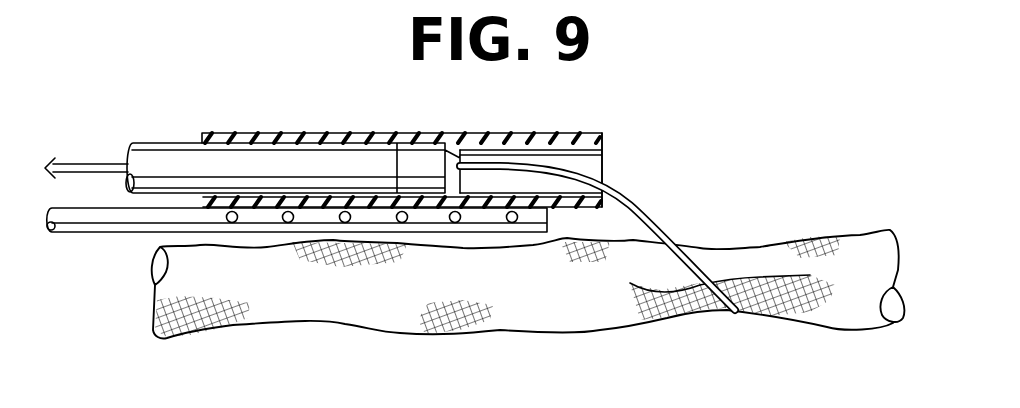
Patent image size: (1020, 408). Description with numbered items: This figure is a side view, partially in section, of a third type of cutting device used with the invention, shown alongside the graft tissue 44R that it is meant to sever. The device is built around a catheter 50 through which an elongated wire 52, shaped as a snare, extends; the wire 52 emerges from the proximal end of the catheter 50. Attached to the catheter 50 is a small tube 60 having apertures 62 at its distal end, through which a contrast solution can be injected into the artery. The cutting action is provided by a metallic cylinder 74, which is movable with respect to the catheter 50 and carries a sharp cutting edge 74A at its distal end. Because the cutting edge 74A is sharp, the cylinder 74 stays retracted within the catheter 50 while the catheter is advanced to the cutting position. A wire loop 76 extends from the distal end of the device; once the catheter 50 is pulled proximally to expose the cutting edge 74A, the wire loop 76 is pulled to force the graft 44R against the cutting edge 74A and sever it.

The tissue (right side) 44R is at (297, 318).
The catheter 50 is at (257, 135).
The elongated wire 52 is at (68, 168).
The small tube 60 is at (93, 223).
The apertures 62 is at (287, 223).
The metallic cylinder 74 is at (329, 163).
The cutting edge 74A is at (462, 148).
The wire loop 76 is at (655, 207).